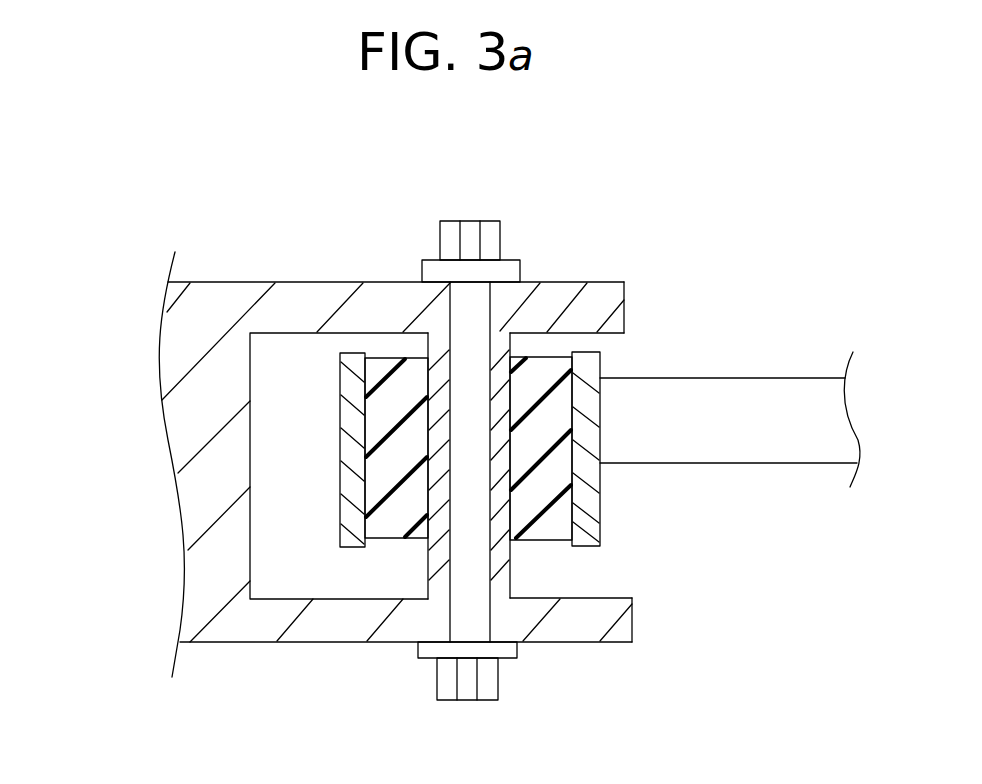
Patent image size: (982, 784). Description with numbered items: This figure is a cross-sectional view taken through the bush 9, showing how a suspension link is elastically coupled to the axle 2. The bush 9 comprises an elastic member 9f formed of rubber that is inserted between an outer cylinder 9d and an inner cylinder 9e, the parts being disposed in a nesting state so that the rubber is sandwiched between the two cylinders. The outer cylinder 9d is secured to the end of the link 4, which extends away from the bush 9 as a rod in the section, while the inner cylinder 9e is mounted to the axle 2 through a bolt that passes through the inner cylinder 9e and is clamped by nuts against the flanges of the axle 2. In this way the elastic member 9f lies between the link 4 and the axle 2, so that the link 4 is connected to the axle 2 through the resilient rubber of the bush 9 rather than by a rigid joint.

The axle 2 is at (193, 347).
The link 4 is at (743, 392).
The bush 9 is at (687, 170).
The inner cylinder 9e is at (498, 347).
The elastic member 9f is at (542, 375).
The outer cylinder 9d is at (585, 363).